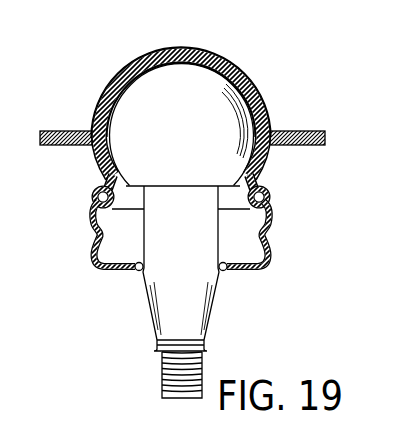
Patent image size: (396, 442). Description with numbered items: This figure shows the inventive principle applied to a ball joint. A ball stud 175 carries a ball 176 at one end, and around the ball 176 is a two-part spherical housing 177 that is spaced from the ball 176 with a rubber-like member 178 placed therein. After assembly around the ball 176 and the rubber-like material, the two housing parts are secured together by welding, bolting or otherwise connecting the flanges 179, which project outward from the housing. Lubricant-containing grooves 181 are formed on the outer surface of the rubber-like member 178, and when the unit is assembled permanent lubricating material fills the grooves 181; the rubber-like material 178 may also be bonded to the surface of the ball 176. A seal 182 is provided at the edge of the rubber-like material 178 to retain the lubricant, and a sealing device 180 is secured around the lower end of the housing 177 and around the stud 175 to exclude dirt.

The ball stud 175 is at (208, 328).
The ball 176 is at (182, 125).
The two-part spherical housing 177 is at (152, 55).
The rubber-like member 178 is at (250, 81).
The flanges 179 is at (302, 133).
The sealing device 180 is at (272, 242).
The lubricant-containing grooves 181 is at (126, 74).
The seal 182 is at (269, 196).